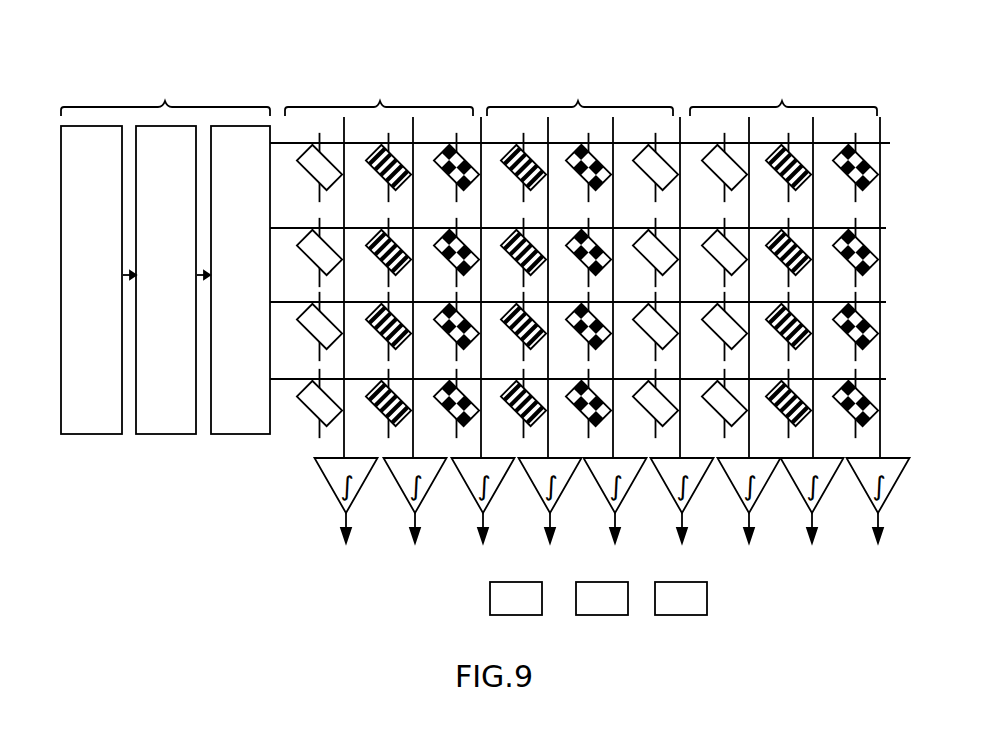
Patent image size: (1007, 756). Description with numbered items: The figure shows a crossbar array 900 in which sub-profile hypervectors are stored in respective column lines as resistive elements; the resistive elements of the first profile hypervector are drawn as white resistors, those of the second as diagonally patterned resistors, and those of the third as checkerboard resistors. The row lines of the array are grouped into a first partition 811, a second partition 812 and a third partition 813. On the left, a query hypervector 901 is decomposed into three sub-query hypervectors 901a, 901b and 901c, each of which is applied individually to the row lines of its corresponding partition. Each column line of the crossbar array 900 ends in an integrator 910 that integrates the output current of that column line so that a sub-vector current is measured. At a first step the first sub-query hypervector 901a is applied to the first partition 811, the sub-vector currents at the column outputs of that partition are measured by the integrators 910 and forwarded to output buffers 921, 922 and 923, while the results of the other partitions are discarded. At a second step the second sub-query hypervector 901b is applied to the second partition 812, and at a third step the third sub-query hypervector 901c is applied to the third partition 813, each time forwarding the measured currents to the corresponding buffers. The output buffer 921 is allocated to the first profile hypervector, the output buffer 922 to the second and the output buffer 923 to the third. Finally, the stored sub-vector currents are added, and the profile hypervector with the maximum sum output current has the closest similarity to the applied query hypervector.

The crossbar array 900 is at (908, 671).
The query hypervector 901 is at (165, 73).
The first sub-query hypervector 901a is at (240, 434).
The second sub-query hypervector 901b is at (166, 434).
The third sub-query hypervector 901c is at (91, 434).
The first partition 811 is at (380, 54).
The second partition 812 is at (578, 54).
The third partition 813 is at (783, 58).
The integrator 910 is at (345, 497).
The output buffer 921 is at (505, 598).
The output buffer 922 is at (590, 614).
The output buffer 923 is at (707, 598).